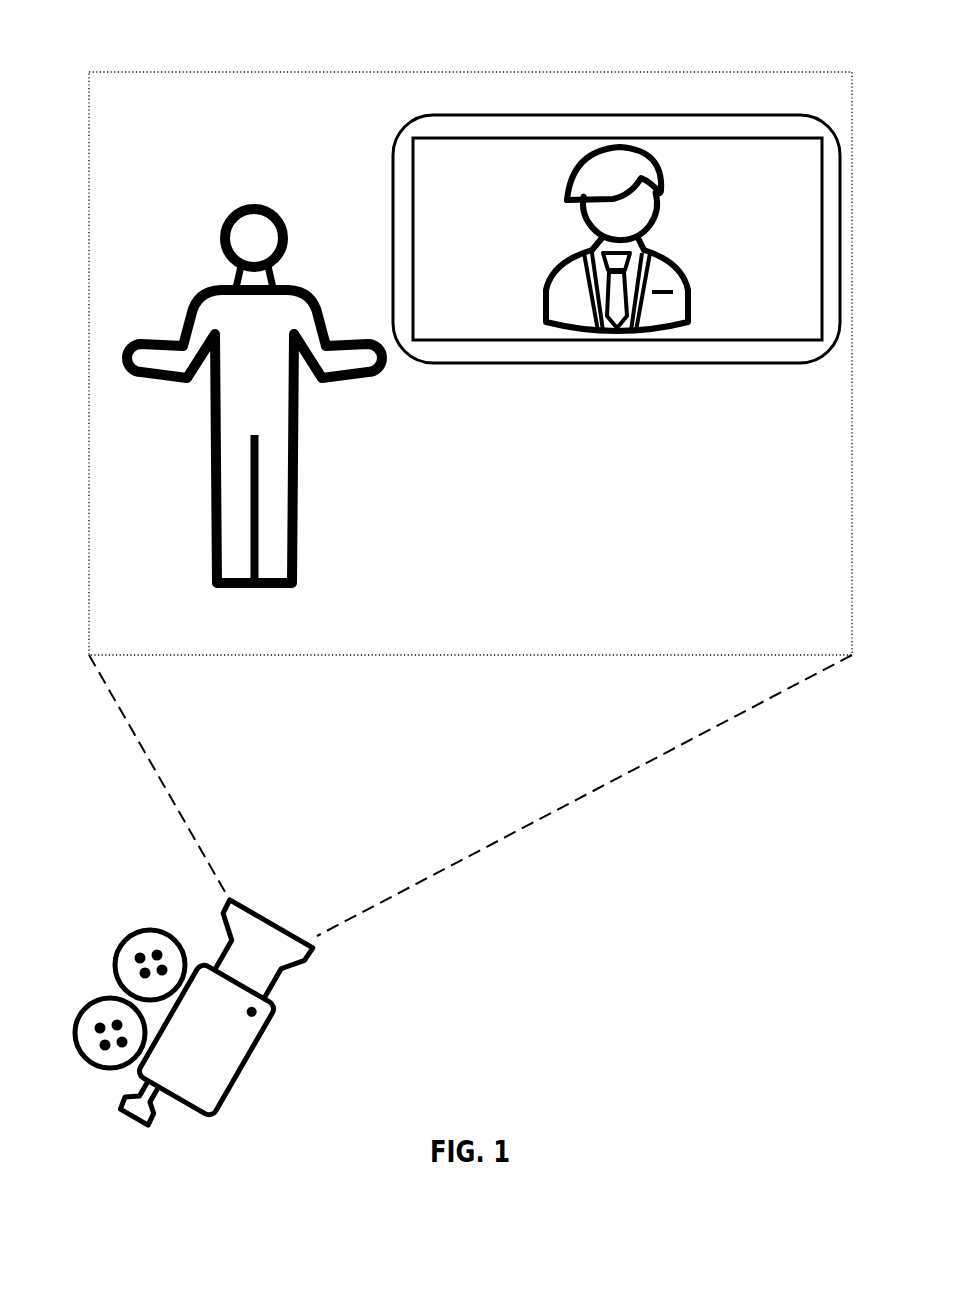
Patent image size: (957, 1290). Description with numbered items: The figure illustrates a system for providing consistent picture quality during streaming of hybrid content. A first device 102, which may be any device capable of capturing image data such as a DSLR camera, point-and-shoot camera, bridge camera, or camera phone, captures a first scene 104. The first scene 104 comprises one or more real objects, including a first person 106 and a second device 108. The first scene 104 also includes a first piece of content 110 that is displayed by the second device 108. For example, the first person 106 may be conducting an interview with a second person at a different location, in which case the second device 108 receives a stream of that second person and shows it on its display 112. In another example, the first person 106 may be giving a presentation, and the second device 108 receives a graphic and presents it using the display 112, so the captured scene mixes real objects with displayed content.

The first device 102 is at (152, 926).
The first scene 104 is at (458, 72).
The first person 106 is at (282, 218).
The second device 108 is at (478, 363).
The first piece of content 110 is at (690, 287).
The display 112 is at (413, 240).